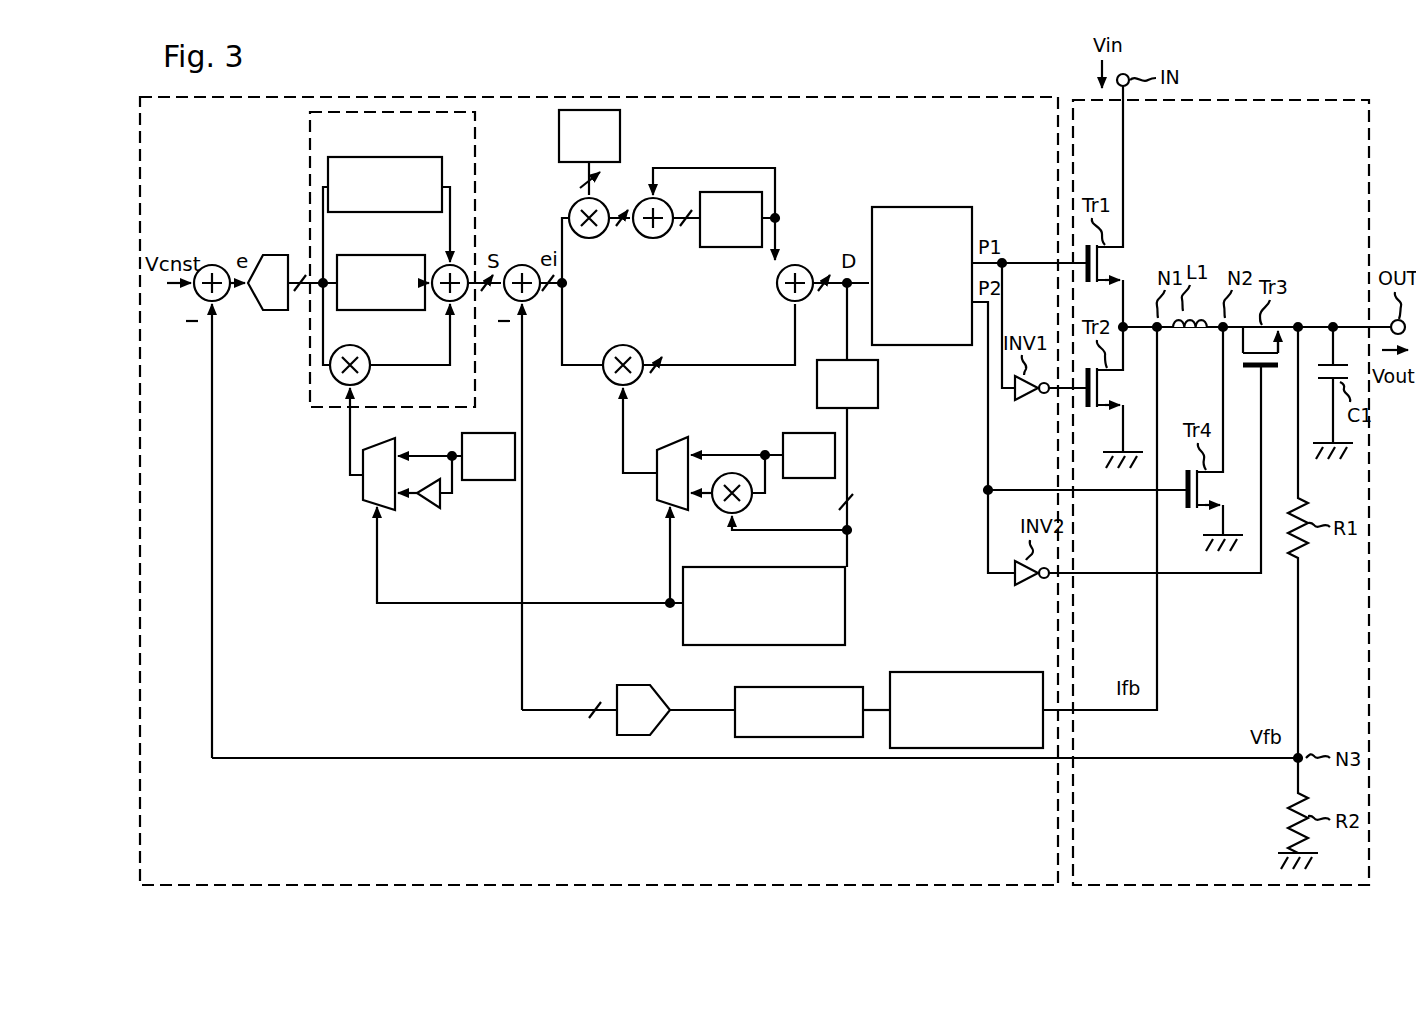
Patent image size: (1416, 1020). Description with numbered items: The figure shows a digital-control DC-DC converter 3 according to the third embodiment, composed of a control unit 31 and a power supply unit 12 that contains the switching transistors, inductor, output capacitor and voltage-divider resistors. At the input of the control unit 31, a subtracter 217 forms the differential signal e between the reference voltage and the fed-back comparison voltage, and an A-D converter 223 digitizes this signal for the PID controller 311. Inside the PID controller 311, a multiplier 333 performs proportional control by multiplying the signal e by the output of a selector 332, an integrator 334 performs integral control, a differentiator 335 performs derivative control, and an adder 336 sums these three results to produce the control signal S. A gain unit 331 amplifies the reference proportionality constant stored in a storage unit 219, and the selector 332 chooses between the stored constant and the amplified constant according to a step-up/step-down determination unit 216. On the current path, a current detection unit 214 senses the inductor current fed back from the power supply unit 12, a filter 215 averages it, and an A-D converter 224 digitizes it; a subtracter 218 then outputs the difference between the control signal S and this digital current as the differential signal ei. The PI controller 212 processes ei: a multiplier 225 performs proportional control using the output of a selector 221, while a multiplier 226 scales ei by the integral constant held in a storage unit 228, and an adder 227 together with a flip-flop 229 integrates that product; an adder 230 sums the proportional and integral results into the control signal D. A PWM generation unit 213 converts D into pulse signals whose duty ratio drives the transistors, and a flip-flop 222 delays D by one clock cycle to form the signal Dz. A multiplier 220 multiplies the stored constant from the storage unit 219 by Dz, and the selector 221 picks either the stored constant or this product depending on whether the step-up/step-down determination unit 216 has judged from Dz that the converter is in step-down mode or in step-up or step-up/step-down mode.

The DC-DC converter 3 is at (896, 53).
The control unit 31 is at (697, 97).
The power supply unit 12 is at (1232, 100).
The PID controller 311 is at (478, 145).
The PI controller 212 is at (728, 153).
The PWM generation unit 213 is at (918, 207).
The current detection unit 214 is at (970, 672).
The filter 215 is at (850, 687).
The step-up/step-down determination unit 216 is at (848, 578).
The subtracter 217 is at (214, 263).
The subtracter 218 is at (527, 262).
The storage unit 219 is at (497, 480).
The multiplier 220 is at (750, 495).
The selector 221 is at (677, 440).
The flip-flop 222 is at (866, 380).
The A-D converter 223 is at (272, 256).
The A-D converter 224 is at (634, 685).
The multiplier 225 is at (636, 348).
The multiplier 226 is at (594, 238).
The adder 227 is at (656, 238).
The storage unit 228 is at (620, 130).
The flip-flop 229 is at (740, 238).
The adder 230 is at (808, 263).
The gain unit 331 is at (430, 511).
The selector 332 is at (360, 482).
The multiplier 333 is at (372, 355).
The integrator 334 is at (366, 255).
The differentiator 335 is at (368, 157).
The adder 336 is at (464, 265).